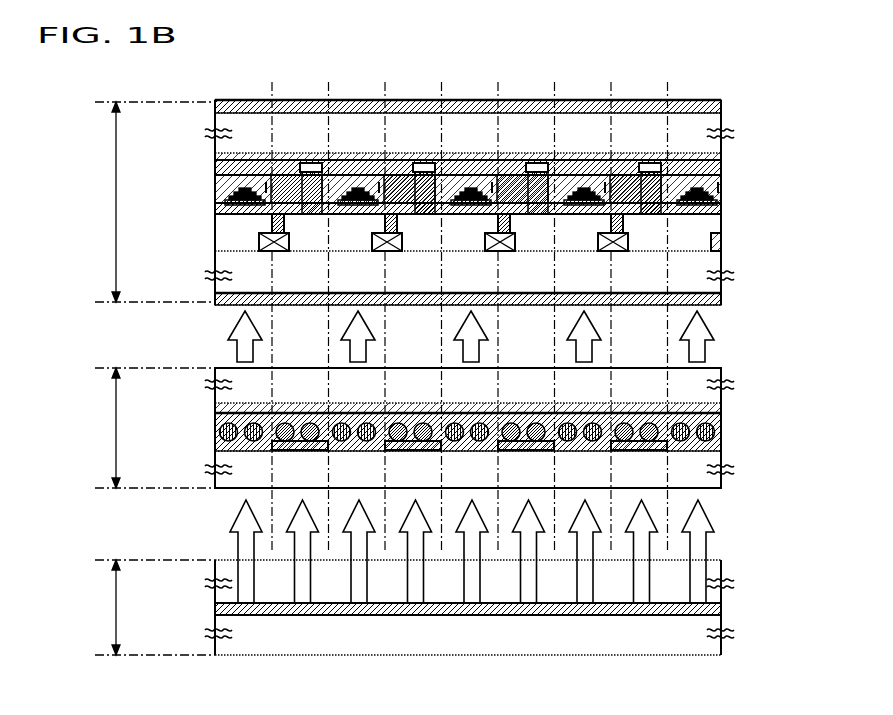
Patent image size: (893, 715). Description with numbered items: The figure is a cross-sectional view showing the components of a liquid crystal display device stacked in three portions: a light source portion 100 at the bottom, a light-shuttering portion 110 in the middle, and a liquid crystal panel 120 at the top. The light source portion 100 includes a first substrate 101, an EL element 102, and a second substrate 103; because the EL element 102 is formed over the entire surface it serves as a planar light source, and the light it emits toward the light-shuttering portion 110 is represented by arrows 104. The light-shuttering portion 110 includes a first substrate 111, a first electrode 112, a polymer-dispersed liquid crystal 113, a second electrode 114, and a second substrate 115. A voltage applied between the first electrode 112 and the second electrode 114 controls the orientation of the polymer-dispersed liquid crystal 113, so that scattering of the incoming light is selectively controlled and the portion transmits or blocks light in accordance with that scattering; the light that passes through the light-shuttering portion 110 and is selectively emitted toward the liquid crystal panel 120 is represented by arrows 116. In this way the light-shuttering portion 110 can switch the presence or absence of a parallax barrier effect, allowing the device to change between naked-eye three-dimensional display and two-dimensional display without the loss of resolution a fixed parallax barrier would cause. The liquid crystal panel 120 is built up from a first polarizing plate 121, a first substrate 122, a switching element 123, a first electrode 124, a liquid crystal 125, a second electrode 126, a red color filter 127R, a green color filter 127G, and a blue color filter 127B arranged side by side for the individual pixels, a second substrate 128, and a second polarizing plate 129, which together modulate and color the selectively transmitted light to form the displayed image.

The light source portion 100 is at (139, 607).
The first substrate 101 is at (721, 623).
The EL element 102 is at (215, 606).
The second substrate 103 is at (215, 560).
The arrows 104 is at (228, 522).
The light-shuttering portion 110 is at (139, 428).
The first substrate 111 is at (215, 445).
The first electrode 112 is at (640, 450).
The polymer-dispersed liquid crystal 113 is at (215, 420).
The second electrode 114 is at (215, 406).
The second substrate 115 is at (721, 373).
The arrows 116 is at (228, 337).
The liquid crystal panel 120 is at (139, 202).
The first polarizing plate 121 is at (721, 293).
The first substrate 122 is at (215, 250).
The switching element 123 is at (258, 234).
The first electrode 124 is at (215, 190).
The liquid crystal 125 is at (215, 168).
The second electrode 126 is at (721, 158).
The red color filter 127R is at (238, 176).
The green color filter 127G is at (358, 176).
The blue color filter 127B is at (468, 176).
The second substrate 128 is at (215, 100).
The second polarizing plate 129 is at (300, 114).